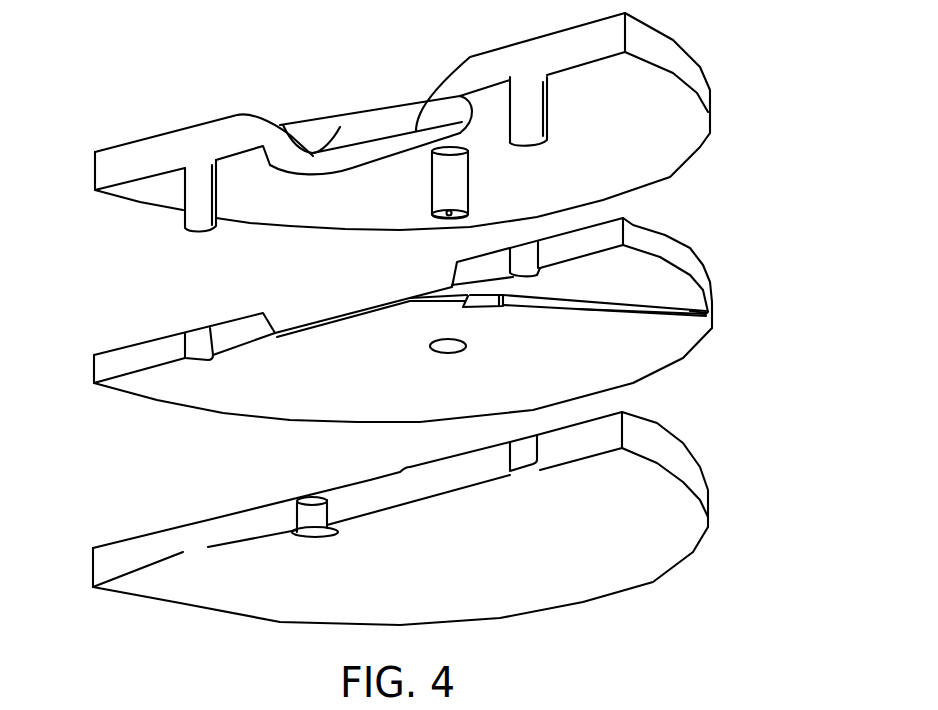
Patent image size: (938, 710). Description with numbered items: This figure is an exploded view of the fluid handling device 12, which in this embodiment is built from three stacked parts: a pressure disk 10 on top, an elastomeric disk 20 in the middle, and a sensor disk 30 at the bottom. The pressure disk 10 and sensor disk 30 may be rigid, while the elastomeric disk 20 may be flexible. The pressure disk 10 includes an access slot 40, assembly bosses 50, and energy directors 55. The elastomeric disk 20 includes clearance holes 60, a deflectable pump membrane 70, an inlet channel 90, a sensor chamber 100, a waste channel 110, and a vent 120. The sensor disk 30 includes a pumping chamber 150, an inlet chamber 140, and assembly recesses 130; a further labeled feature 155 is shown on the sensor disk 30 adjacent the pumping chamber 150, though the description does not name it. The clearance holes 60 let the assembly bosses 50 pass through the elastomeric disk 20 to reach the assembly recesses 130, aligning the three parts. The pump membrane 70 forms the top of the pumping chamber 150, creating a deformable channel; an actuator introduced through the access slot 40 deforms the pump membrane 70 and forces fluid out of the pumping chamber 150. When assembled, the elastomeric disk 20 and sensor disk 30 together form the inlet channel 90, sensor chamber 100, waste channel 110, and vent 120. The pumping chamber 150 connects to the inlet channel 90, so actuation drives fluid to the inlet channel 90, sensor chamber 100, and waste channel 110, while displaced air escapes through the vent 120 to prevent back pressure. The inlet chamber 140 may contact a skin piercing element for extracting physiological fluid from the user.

The pressure disk 10 is at (157, 153).
The fluid handling device 12 is at (721, 44).
The access slot 40 is at (361, 143).
The assembly bosses 50 is at (190, 197).
The energy directors 55 is at (447, 214).
The elastomeric disk 20 is at (129, 361).
The clearance holes 60 is at (193, 363).
The deflectable pump membrane 70 is at (343, 311).
The inlet channel 90 is at (490, 308).
The sensor chamber 100 is at (490, 310).
The waste channel 110 is at (572, 310).
The vent 120 is at (675, 314).
The sensor disk 30 is at (140, 555).
The assembly recesses 130 is at (538, 460).
The inlet chamber 140 is at (313, 537).
The pumping chamber 150 is at (370, 480).
The pin 155 is at (312, 497).